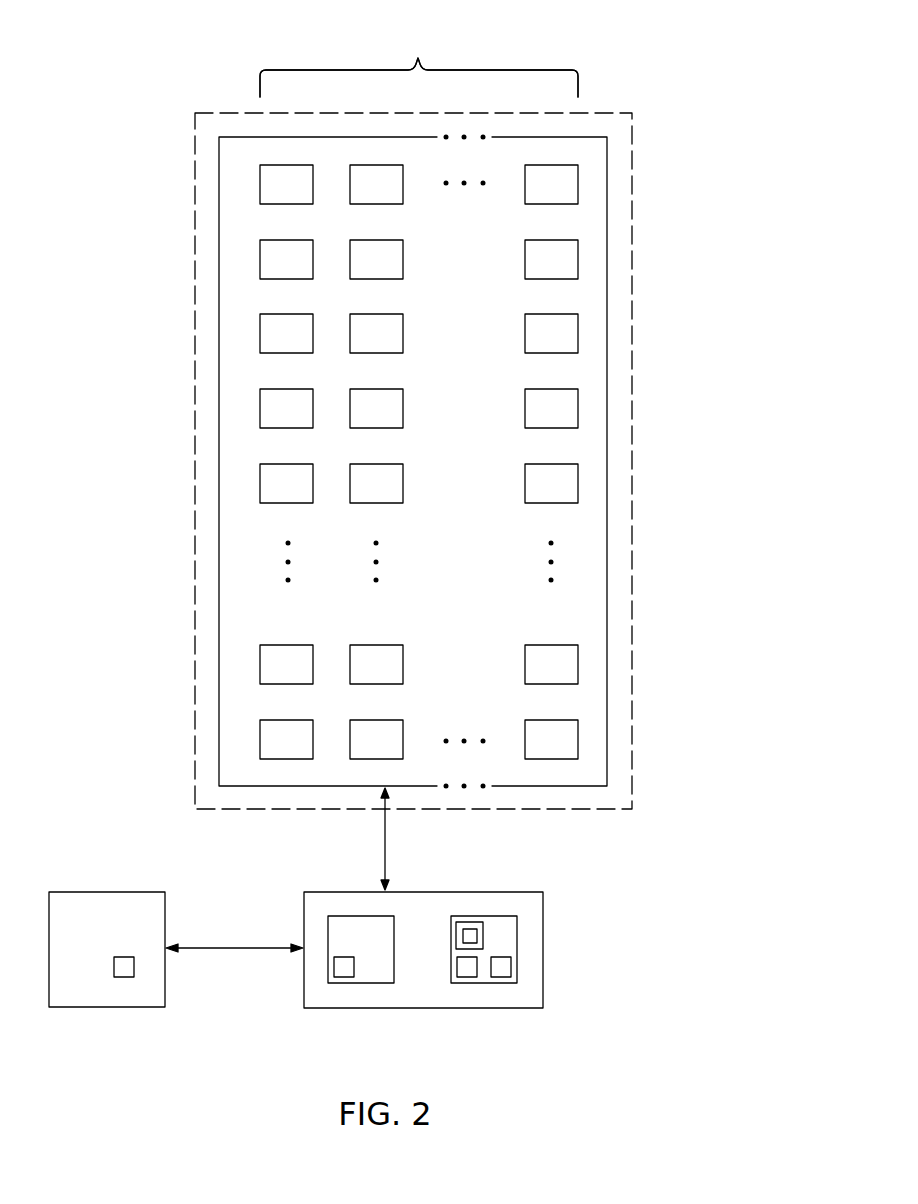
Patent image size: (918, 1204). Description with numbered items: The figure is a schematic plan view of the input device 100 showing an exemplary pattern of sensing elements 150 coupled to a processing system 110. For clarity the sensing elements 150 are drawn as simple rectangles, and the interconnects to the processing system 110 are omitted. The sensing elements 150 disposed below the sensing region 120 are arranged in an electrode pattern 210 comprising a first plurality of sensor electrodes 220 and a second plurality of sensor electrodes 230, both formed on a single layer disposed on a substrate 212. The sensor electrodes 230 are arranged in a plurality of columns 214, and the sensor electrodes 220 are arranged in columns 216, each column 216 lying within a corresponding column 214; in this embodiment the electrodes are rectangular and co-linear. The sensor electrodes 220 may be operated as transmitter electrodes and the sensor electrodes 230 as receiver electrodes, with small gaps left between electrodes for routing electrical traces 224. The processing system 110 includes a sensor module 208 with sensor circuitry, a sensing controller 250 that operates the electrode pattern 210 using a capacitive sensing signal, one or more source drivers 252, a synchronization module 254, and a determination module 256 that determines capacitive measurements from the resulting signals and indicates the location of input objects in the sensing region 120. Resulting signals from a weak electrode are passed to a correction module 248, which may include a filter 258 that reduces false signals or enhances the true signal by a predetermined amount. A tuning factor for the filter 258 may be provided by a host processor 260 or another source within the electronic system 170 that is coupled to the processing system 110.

The input device 100 is at (686, 98).
The processing system 110 is at (549, 950).
The sensing region 120 is at (590, 113).
The sensing elements 150 is at (290, 152).
The electronic system 170 is at (70, 892).
The sensor module 208 is at (508, 933).
The electrode pattern 210 is at (586, 261).
The substrate 212 is at (219, 565).
The columns of sensor electrodes 230 214 is at (419, 62).
The columns of sensor electrodes 220 216 is at (419, 77).
The first plurality of sensor electrodes 220 is at (260, 258).
The electrical traces 224 is at (388, 838).
The second plurality of sensor electrodes 230 is at (260, 183).
The correction module 248 is at (470, 922).
The sensing controller 250 is at (500, 977).
The source drivers 252 is at (467, 977).
The synchronization module 254 is at (345, 977).
The determination module 256 is at (334, 921).
The filter 258 is at (463, 936).
The host processor 260 is at (125, 977).